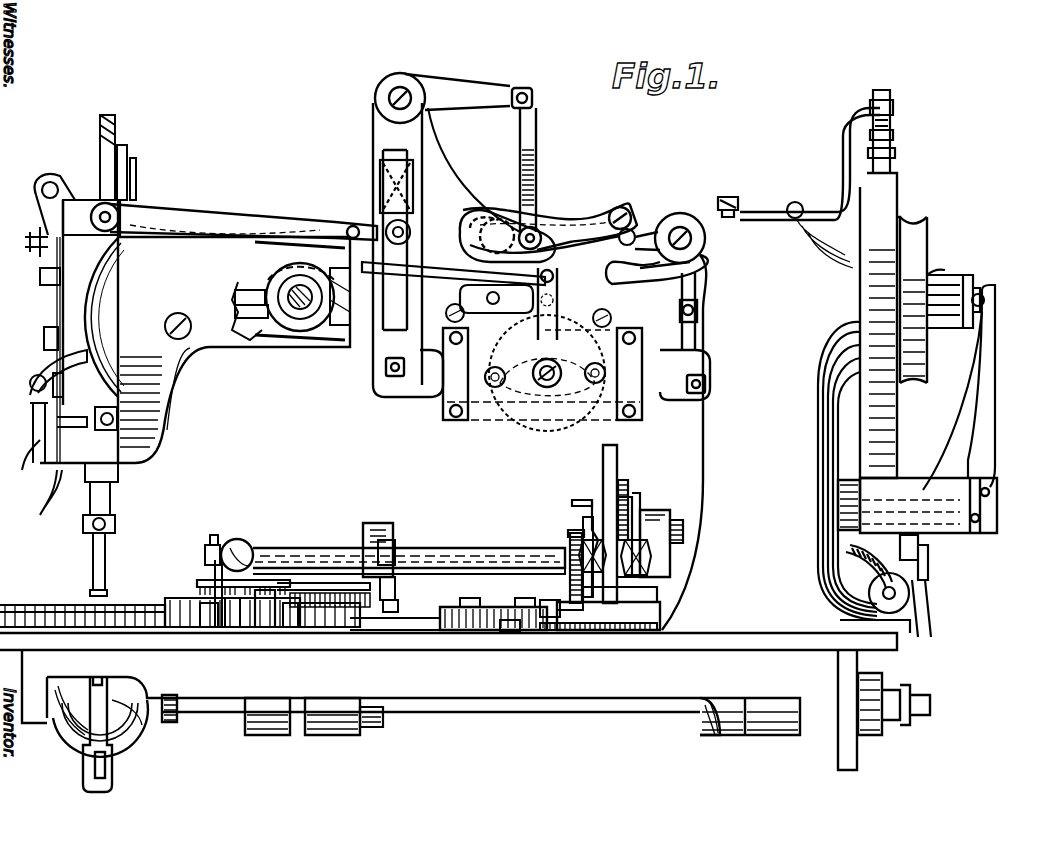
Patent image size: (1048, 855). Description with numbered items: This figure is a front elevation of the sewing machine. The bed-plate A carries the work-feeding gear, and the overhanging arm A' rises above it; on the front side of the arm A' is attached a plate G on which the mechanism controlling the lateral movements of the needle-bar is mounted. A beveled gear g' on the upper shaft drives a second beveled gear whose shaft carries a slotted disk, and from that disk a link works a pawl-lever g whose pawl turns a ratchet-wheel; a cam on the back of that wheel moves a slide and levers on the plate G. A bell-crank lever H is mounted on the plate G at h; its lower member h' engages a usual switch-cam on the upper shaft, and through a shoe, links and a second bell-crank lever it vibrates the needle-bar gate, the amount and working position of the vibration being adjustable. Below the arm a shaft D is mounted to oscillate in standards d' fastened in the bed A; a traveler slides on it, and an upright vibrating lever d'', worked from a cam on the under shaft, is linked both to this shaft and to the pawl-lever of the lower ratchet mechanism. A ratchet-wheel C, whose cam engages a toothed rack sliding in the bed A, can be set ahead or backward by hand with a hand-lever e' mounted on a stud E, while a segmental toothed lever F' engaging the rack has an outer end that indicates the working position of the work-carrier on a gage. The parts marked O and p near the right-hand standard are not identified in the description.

The bed-plate A is at (448, 684).
The overhanging arm A' is at (195, 331).
The ratchet-wheel C is at (195, 600).
The hand-lever e' is at (230, 634).
The stud E is at (258, 628).
The standards d' is at (229, 561).
The upright vibrating lever d'' is at (591, 524).
The shaft D is at (455, 552).
The segmental toothed lever F' is at (493, 603).
The pawl-lever g is at (547, 330).
The beveled gear g' is at (334, 320).
The plate G is at (626, 442).
The mounting point of bell-crank lever h is at (500, 228).
The lower member of bell-crank lever h' is at (496, 317).
The bell-crank lever H is at (597, 207).
The oil tube / guard O is at (833, 293).
The pitman p is at (927, 505).